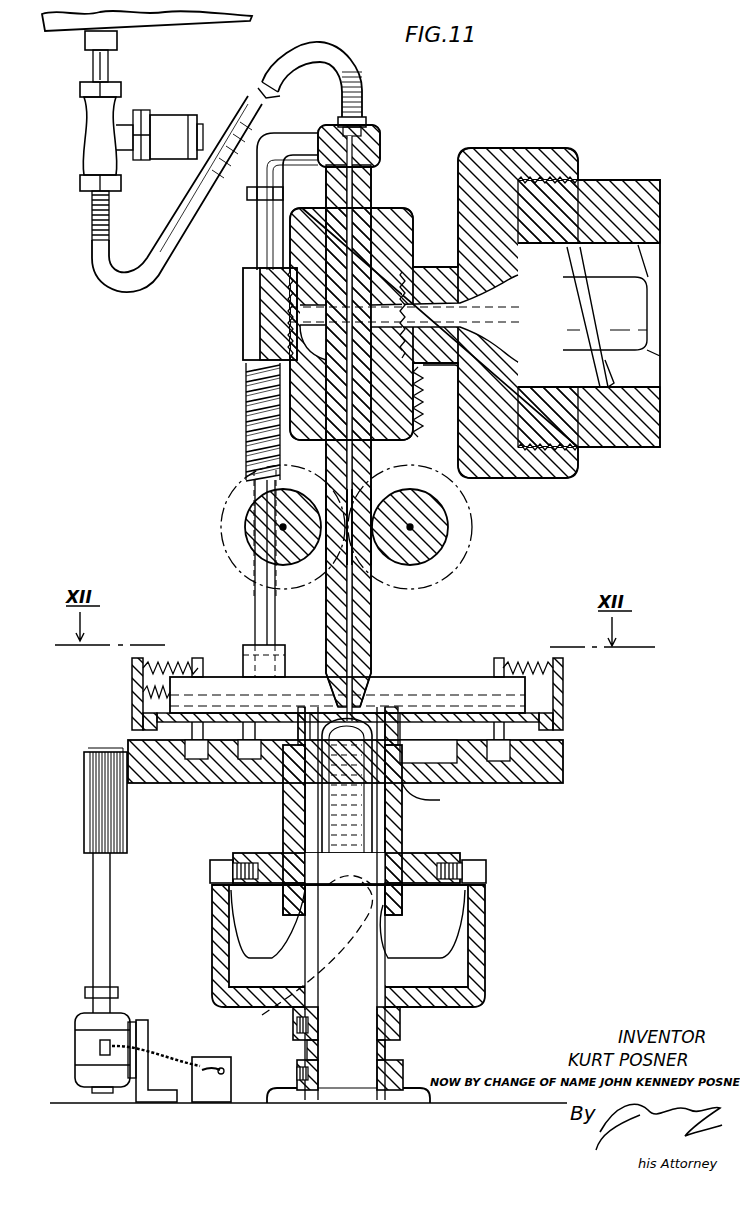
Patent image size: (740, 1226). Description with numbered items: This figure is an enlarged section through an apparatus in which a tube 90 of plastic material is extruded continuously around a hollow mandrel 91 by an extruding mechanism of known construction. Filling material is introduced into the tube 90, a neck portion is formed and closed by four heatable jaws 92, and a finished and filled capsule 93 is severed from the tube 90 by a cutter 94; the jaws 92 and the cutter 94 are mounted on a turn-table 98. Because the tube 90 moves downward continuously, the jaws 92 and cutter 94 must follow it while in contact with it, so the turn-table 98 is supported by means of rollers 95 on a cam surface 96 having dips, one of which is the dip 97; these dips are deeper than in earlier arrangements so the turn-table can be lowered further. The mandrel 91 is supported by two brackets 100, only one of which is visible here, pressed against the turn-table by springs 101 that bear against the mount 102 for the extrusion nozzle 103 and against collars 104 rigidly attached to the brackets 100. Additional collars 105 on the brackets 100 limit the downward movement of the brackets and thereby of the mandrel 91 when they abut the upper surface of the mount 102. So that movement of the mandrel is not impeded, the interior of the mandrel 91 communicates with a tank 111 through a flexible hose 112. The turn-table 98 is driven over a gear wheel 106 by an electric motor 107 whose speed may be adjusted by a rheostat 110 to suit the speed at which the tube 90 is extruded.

The tube 90 is at (402, 460).
The hollow mandrel 91 is at (610, 250).
The heatable jaws 92 is at (307, 682).
The capsule 93 is at (345, 845).
The cutter 94 is at (283, 802).
The rollers 95 is at (215, 873).
The cam surface 96 is at (214, 887).
The dip 97 is at (292, 1006).
The turn-table 98 is at (562, 752).
The brackets 100 is at (255, 614).
The springs 101 is at (252, 430).
The mount 102 is at (282, 331).
The extrusion nozzle 103 is at (263, 409).
The collars 104 is at (240, 506).
The additional collars 105 is at (257, 193).
The gear wheel 106 is at (100, 822).
The electric motor 107 is at (90, 1043).
The rheostat 110 is at (215, 1090).
The tank 111 is at (65, 30).
The flexible hose 112 is at (112, 266).